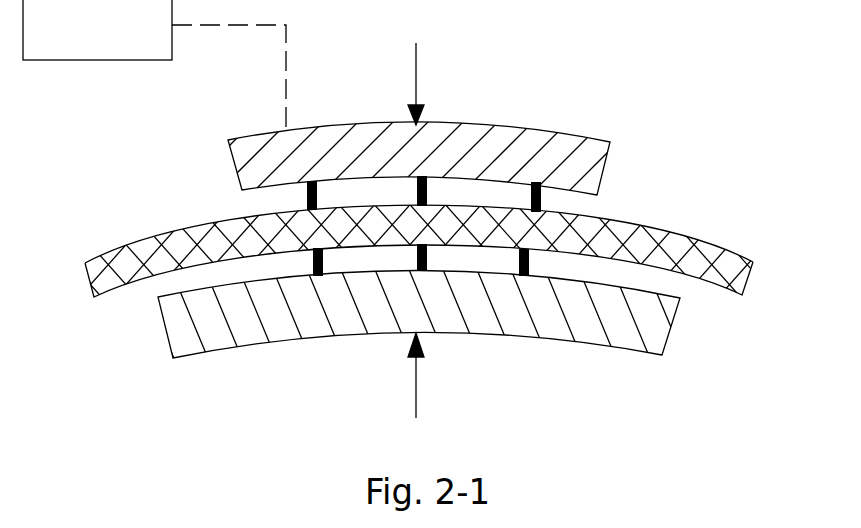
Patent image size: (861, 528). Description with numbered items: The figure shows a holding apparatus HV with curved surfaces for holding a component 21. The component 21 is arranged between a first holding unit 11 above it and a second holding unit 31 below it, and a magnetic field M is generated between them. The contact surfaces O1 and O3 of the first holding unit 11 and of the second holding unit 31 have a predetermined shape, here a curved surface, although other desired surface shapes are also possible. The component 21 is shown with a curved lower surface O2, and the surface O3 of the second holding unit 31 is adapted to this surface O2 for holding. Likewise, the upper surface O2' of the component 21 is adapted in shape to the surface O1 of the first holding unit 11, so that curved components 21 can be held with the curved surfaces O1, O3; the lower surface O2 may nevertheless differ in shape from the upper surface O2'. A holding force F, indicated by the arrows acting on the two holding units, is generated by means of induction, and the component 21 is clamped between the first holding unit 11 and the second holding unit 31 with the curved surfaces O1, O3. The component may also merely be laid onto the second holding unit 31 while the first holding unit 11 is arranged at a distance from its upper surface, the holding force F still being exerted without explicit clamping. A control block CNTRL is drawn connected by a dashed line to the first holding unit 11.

The first holding unit 11 is at (592, 163).
The component 21 is at (430, 223).
The second holding unit 31 is at (660, 333).
The contact surface of the first holding unit O1 is at (409, 164).
The curved surface of the component O2 is at (430, 268).
The upper surface of the component O2' is at (428, 201).
The contact surface of the second holding unit O3 is at (381, 341).
The magnetic field M is at (432, 188).
The holding force F is at (427, 229).
The holding apparatus HV is at (818, 88).
The controller CNTRL is at (154, 65).